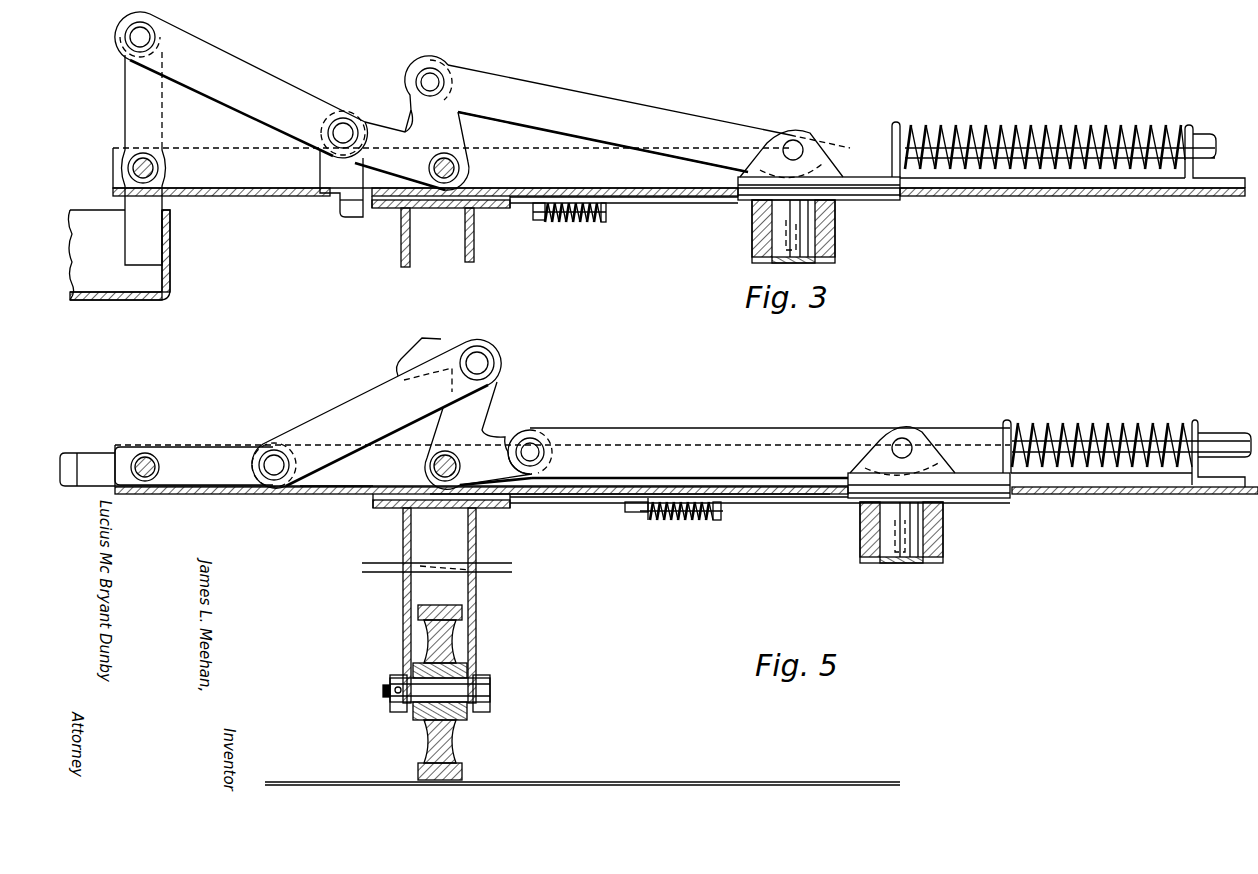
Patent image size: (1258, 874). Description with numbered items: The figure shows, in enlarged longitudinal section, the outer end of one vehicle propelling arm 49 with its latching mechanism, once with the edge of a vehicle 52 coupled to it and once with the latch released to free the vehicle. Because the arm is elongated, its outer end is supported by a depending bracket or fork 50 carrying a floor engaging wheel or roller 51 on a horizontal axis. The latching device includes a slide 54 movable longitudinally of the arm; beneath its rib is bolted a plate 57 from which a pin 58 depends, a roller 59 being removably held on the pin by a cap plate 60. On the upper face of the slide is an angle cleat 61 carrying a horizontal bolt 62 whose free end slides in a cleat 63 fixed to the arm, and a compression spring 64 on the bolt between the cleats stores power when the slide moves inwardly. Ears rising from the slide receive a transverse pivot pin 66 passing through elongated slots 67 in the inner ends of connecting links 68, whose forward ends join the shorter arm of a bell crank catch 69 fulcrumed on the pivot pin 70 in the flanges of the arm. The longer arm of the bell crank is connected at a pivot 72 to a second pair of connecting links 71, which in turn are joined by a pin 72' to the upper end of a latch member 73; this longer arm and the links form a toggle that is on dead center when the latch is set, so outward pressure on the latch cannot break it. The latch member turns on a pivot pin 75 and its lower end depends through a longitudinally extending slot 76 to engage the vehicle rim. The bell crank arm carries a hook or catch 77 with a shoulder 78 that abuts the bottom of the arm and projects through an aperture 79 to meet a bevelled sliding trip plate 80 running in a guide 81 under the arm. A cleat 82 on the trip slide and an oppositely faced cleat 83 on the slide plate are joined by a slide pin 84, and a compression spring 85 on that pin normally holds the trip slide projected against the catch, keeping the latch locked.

In FIG. 3, the arm 49 is at (232, 190).
In FIG. 5, the arm 49 is at (659, 469).
In FIG. 3, the depending bracket or fork 50 is at (410, 252).
In FIG. 5, the depending bracket or fork 50 is at (477, 620).
In FIG. 5, the floor engaging wheel or roller 51 is at (452, 650).
In FIG. 3, the vehicle 52 is at (119, 255).
In FIG. 3, the slide 54 is at (930, 193).
In FIG. 5, the slide 54 is at (937, 474).
In FIG. 3, the plate 57 is at (740, 199).
In FIG. 5, the plate 57 is at (1000, 504).
In FIG. 5, the pin 58 is at (945, 543).
In FIG. 3, the roller 59 is at (837, 231).
In FIG. 5, the roller 59 is at (860, 545).
In FIG. 5, the cap plate 60 is at (895, 563).
In FIG. 3, the angle cleat 61 is at (898, 124).
In FIG. 5, the angle cleat 61 is at (1010, 424).
In FIG. 3, the bolt 62 is at (1076, 130).
In FIG. 5, the bolt 62 is at (1210, 435).
In FIG. 3, the cleat 63 is at (1189, 124).
In FIG. 5, the cleat 63 is at (1195, 422).
In FIG. 3, the compression spring 64 is at (1018, 132).
In FIG. 5, the compression spring 64 is at (1122, 430).
In FIG. 3, the transverse pivot pin 66 is at (795, 140).
In FIG. 5, the transverse pivot pin 66 is at (905, 440).
In FIG. 3, the elongated slots 67 is at (830, 150).
In FIG. 5, the elongated slots 67 is at (878, 440).
In FIG. 3, the connecting links 68 is at (645, 100).
In FIG. 5, the connecting links 68 is at (742, 437).
In FIG. 3, the bell crank catch 69 is at (448, 126).
In FIG. 5, the bell crank catch 69 is at (500, 412).
In FIG. 3, the pivot pin 70 is at (470, 168).
In FIG. 5, the pivot pin 70 is at (428, 467).
In FIG. 3, the connecting links 71 is at (262, 82).
In FIG. 5, the connecting links 71 is at (343, 417).
In FIG. 3, the pivot 72 is at (343, 106).
In FIG. 5, the pivot 72 is at (505, 350).
In FIG. 3, the pin 72' is at (172, 34).
In FIG. 5, the pin 72' is at (274, 443).
In FIG. 3, the latch member 73 is at (163, 130).
In FIG. 5, the latch member 73 is at (196, 455).
In FIG. 5, the pivot pin 75 is at (148, 455).
In FIG. 3, the longitudinally extending slot 76 is at (125, 173).
In FIG. 3, the hook or catch 77 is at (346, 210).
In FIG. 3, the shoulder 78 is at (322, 195).
In FIG. 5, the shoulder 78 is at (410, 342).
In FIG. 3, the aperture 79 is at (366, 150).
In FIG. 5, the aperture 79 is at (348, 494).
In FIG. 3, the sliding trip plate 80 is at (385, 207).
In FIG. 5, the sliding trip plate 80 is at (548, 498).
In FIG. 3, the guide 81 is at (473, 248).
In FIG. 5, the guide 81 is at (403, 520).
In FIG. 5, the cleat 82 is at (640, 514).
In FIG. 5, the cleat 83 is at (722, 512).
In FIG. 3, the slide pin 84 is at (538, 220).
In FIG. 5, the slide pin 84 is at (670, 522).
In FIG. 3, the compression spring 85 is at (577, 223).
In FIG. 5, the compression spring 85 is at (703, 522).